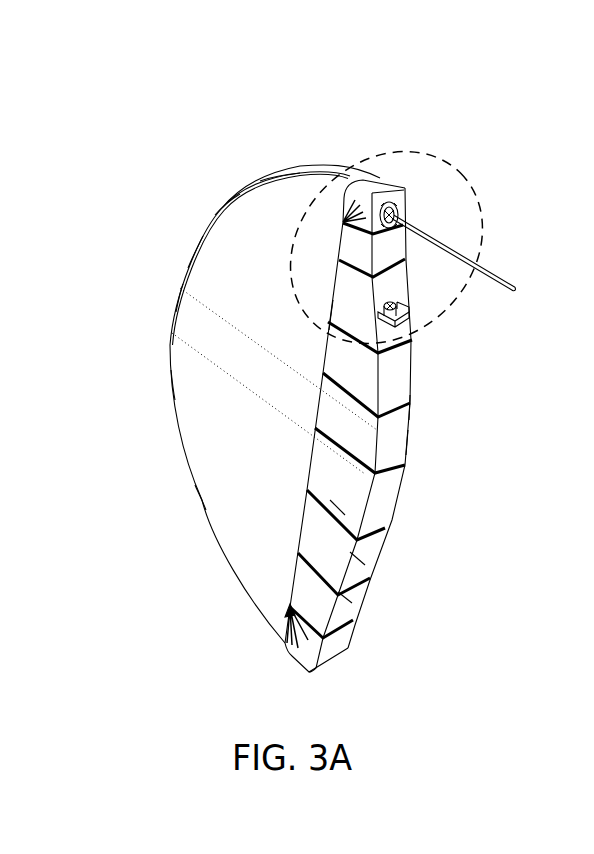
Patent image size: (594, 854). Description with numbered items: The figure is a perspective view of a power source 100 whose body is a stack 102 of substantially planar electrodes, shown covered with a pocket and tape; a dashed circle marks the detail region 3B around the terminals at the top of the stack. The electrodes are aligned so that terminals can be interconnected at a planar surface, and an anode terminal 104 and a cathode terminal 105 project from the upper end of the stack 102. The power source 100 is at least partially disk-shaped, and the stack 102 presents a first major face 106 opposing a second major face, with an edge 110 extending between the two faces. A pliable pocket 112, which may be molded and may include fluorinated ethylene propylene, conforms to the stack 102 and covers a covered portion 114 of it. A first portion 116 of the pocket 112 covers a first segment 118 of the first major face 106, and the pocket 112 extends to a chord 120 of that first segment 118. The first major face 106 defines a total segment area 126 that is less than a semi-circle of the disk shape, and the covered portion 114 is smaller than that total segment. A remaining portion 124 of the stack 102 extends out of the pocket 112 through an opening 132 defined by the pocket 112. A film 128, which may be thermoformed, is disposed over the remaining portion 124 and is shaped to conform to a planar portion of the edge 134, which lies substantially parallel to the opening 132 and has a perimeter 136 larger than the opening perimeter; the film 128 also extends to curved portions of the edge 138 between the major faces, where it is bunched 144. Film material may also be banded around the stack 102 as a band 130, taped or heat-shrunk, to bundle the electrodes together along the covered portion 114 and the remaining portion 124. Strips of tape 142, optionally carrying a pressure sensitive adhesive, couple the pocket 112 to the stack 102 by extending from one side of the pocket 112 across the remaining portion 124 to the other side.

The power source 100 is at (494, 141).
The stack 102 is at (396, 203).
The anode terminal 104 is at (497, 270).
The cathode terminal 105 is at (395, 322).
The first major face 106 is at (273, 269).
The edge 110 is at (288, 175).
The pocket 112 is at (178, 300).
The covered portion 114 is at (193, 259).
The first portion 116 is at (185, 385).
The first segment 118 is at (220, 500).
The chord 120 is at (303, 502).
The remaining portion 124 is at (337, 505).
The total segment area 126 is at (212, 208).
The film 128 is at (402, 418).
The band 130 is at (288, 417).
The opening 132 is at (327, 312).
The planar portion of the edge 134 is at (347, 598).
The perimeter 136 is at (407, 442).
The curved portions of the edge 138 is at (310, 659).
The tape 142 is at (362, 558).
The bunched film 144 is at (343, 222).
The detail view region 3B is at (478, 200).